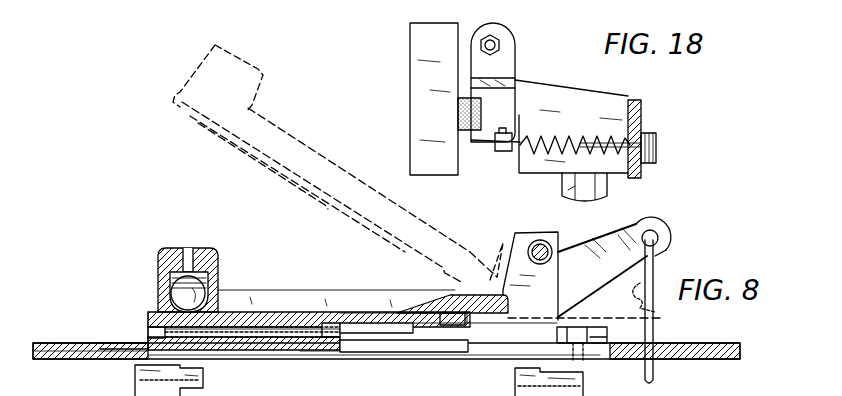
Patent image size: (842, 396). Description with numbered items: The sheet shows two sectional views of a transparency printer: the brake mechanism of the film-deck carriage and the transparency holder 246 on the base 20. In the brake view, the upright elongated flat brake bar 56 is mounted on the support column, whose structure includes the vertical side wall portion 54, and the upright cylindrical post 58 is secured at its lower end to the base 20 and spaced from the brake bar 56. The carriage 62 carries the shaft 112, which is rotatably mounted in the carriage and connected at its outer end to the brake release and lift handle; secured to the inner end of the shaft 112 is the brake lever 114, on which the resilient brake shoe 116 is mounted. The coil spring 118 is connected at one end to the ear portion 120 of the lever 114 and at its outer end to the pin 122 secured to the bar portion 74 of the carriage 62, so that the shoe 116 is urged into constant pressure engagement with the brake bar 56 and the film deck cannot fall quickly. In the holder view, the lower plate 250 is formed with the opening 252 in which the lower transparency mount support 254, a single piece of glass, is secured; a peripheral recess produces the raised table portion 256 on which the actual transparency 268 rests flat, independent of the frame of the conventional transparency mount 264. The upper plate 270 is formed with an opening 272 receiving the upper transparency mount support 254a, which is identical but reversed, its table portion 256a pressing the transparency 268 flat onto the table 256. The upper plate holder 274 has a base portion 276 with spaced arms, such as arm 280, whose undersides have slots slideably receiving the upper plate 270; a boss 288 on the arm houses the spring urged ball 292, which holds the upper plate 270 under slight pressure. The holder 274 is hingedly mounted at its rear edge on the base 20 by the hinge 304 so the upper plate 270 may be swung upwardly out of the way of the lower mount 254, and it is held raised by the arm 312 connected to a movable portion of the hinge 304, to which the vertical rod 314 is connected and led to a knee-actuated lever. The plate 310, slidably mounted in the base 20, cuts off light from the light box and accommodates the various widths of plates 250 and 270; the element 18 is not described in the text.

In FIG. 18, the brake bar 56 is at (440, 119).
In FIG. 18, the brake lever 114 is at (506, 108).
In FIG. 18, the shaft 112 is at (497, 37).
In FIG. 18, the carriage 62 is at (628, 94).
In FIG. 18, the bar portion 74 is at (641, 110).
In FIG. 18, the pin 122 is at (656, 144).
In FIG. 18, the coil spring 118 is at (556, 136).
In FIG. 18, the resilient brake shoe 116 is at (468, 142).
In FIG. 18, the ear portion 120 is at (500, 152).
In FIG. 18, the upright cylindrical post 58 is at (607, 188).
In FIG. 8, the base 20 is at (55, 360).
In FIG. 8, the plate 310 is at (110, 342).
In FIG. 8, the upper transparency mount support 254a is at (315, 312).
In FIG. 8, the opening 272 is at (335, 323).
In FIG. 8, the table portion 256a is at (268, 332).
In FIG. 8, the transparency mount 264 is at (147, 327).
In FIG. 8, the lower transparency mount support 254 is at (293, 352).
In FIG. 8, the raised table portion 256 is at (255, 340).
In FIG. 8, the opening 252 is at (340, 347).
In FIG. 8, the lower plate 250 is at (365, 343).
In FIG. 8, the upper plate 270 is at (365, 318).
In FIG. 8, the arm 280 is at (393, 292).
In FIG. 8, the base portion 276 is at (470, 297).
In FIG. 8, the boss 288 is at (257, 68).
In FIG. 8, the spring urged ball 292 is at (218, 283).
In FIG. 8, the holder 246 is at (173, 248).
In FIG. 8, the transparency 268 is at (280, 313).
In FIG. 8, the upper plate holder 274 is at (380, 203).
In FIG. 8, the hinge 304 is at (532, 233).
In FIG. 8, the arm 312 is at (648, 222).
In FIG. 8, the vertical rod 314 is at (648, 318).
In FIG. 8, the frame 18 is at (503, 384).
In FIG. 8, the vertical side wall portion 54 is at (584, 388).